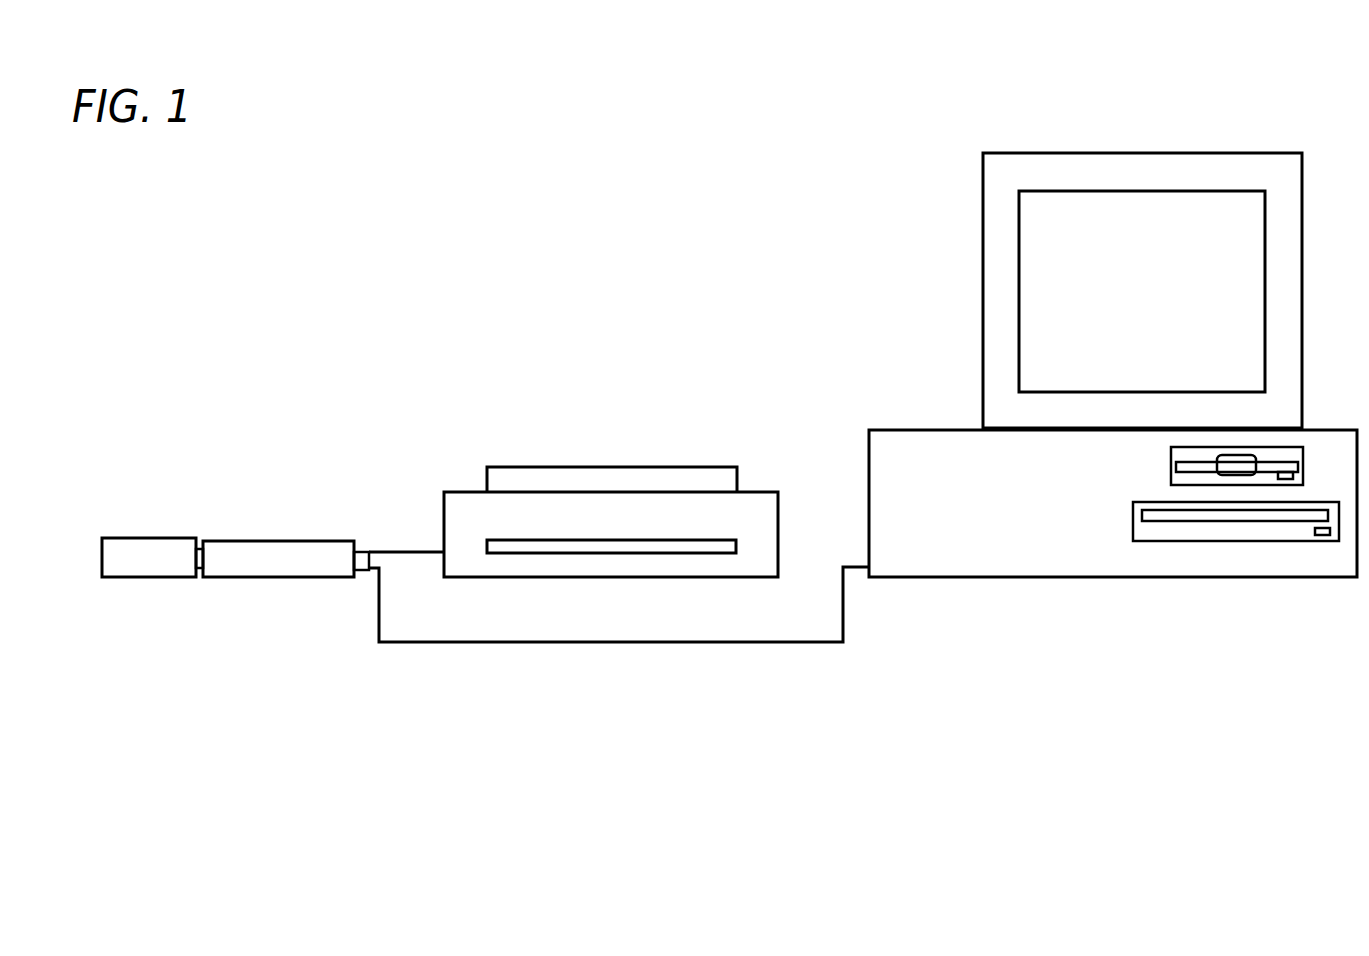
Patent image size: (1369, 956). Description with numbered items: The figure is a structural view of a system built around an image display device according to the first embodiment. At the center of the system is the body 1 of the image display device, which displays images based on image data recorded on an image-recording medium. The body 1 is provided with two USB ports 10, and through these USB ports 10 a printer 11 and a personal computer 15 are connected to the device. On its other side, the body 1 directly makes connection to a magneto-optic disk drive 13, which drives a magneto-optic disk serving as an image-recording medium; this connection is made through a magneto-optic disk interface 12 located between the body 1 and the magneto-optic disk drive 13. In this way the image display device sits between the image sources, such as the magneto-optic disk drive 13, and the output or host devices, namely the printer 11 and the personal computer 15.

The body of the image display device 1 is at (247, 548).
The USB ports 10 is at (364, 552).
The printer 11 is at (512, 471).
The magneto-optic disk interface 12 is at (199, 578).
The magneto-optic disk drive 13 is at (158, 548).
The personal computer 15 is at (990, 185).